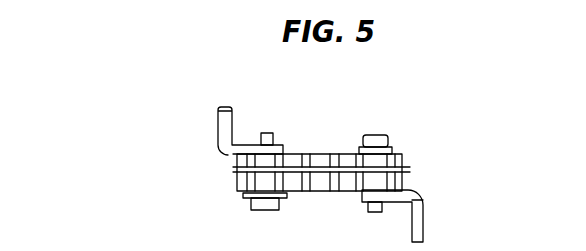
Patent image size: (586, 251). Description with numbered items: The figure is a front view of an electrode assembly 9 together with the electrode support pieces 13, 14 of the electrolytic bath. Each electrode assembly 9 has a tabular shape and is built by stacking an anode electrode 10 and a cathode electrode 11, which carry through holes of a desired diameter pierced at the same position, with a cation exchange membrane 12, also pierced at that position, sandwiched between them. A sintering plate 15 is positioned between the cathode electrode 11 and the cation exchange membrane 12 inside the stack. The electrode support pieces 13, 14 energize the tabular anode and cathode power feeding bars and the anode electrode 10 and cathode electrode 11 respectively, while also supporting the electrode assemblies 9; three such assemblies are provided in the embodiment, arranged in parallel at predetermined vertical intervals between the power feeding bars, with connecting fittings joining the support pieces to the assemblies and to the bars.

The electrode assembly 9 is at (419, 144).
The anode electrode 10 is at (322, 191).
The cathode electrode 11 is at (298, 155).
The cation exchange membrane 12 is at (383, 169).
The electrode support piece 13 is at (423, 218).
The electrode support piece 14 is at (218, 132).
The sintering plate 15 is at (347, 155).